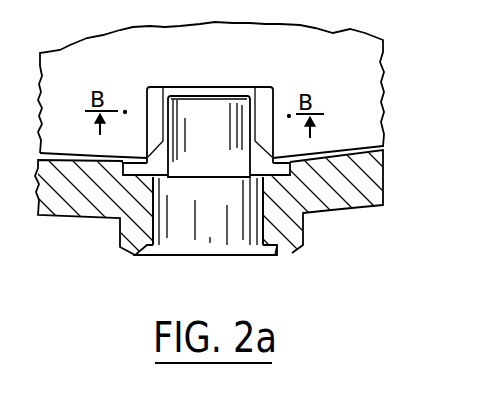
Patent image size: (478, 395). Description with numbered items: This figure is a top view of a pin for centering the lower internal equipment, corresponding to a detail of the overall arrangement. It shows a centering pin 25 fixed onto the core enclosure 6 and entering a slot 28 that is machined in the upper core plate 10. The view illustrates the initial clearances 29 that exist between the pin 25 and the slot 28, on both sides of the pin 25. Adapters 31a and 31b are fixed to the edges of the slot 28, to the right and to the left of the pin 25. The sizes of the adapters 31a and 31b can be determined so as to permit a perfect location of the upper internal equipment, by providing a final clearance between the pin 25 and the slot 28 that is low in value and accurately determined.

The core enclosure 6 is at (363, 185).
The upper core plate 10 is at (363, 85).
The centering pin 25 is at (235, 222).
The slot 28 is at (275, 133).
The initial clearances 29 is at (171, 80).
The adapter 31a is at (268, 105).
The adapter 31b is at (148, 100).